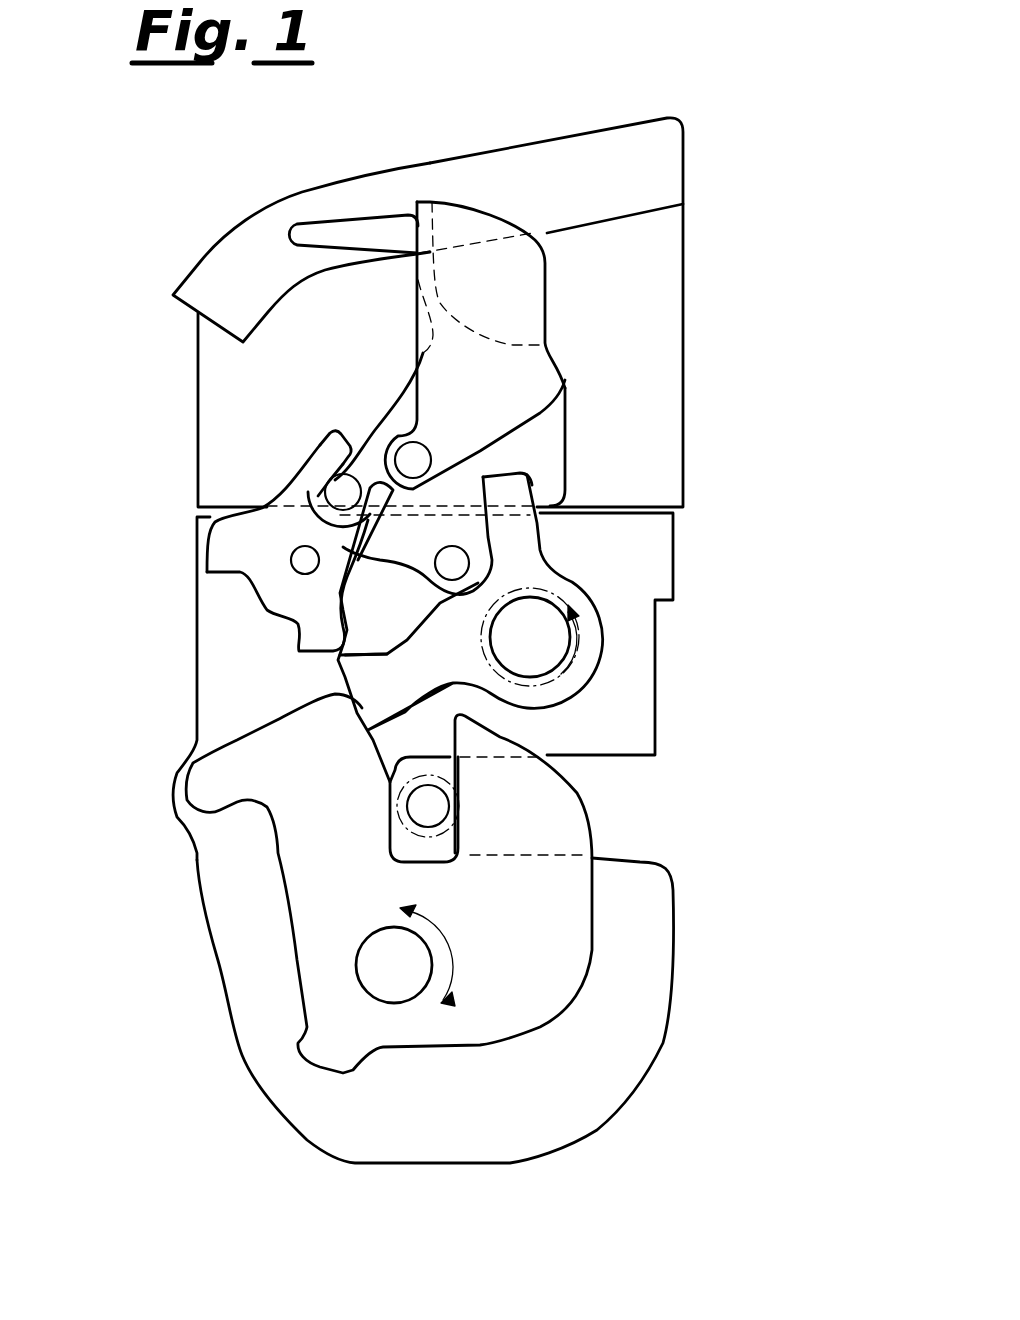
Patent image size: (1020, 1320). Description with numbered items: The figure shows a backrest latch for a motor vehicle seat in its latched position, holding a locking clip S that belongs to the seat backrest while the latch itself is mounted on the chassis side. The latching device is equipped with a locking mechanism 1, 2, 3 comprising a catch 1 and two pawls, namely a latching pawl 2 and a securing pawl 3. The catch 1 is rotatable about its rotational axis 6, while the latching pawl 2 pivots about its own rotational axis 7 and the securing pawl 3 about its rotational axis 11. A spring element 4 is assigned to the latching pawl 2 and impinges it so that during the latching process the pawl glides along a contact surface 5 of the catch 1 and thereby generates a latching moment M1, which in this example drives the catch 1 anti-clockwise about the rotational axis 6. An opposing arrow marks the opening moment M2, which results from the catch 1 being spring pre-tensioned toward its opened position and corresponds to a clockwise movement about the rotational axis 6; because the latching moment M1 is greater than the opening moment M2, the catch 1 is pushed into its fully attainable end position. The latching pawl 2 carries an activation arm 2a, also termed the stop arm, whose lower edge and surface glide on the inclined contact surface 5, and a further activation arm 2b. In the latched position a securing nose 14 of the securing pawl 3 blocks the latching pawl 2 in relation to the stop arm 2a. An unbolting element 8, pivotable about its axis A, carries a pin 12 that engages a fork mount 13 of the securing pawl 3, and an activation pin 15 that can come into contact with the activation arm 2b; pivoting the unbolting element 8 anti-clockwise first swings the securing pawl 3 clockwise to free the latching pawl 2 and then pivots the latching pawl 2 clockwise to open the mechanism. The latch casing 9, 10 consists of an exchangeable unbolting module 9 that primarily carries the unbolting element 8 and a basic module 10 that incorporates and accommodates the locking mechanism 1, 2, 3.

The catch 1 is at (567, 987).
The latching pawl 2 is at (582, 688).
The activation arm 2a is at (362, 708).
The activation arm 2b is at (518, 493).
The securing pawl 3 is at (199, 540).
The spring element 4 is at (577, 640).
The contact surface 5 is at (357, 714).
The rotational axis 6 is at (393, 963).
The rotational axis 7 is at (528, 640).
The unbolting element 8 is at (547, 373).
The unbolting module 9 is at (684, 224).
The basic module 10 is at (307, 1133).
The rotational axis 11 is at (305, 560).
The pin 12 is at (343, 492).
The fork mount 13 is at (321, 462).
The securing nose 14 is at (317, 643).
The activation pin 15 is at (452, 563).
The rotational axis A is at (413, 460).
The locking clip S is at (443, 813).
The latching moment M1 is at (443, 1003).
The opening moment M2 is at (458, 985).